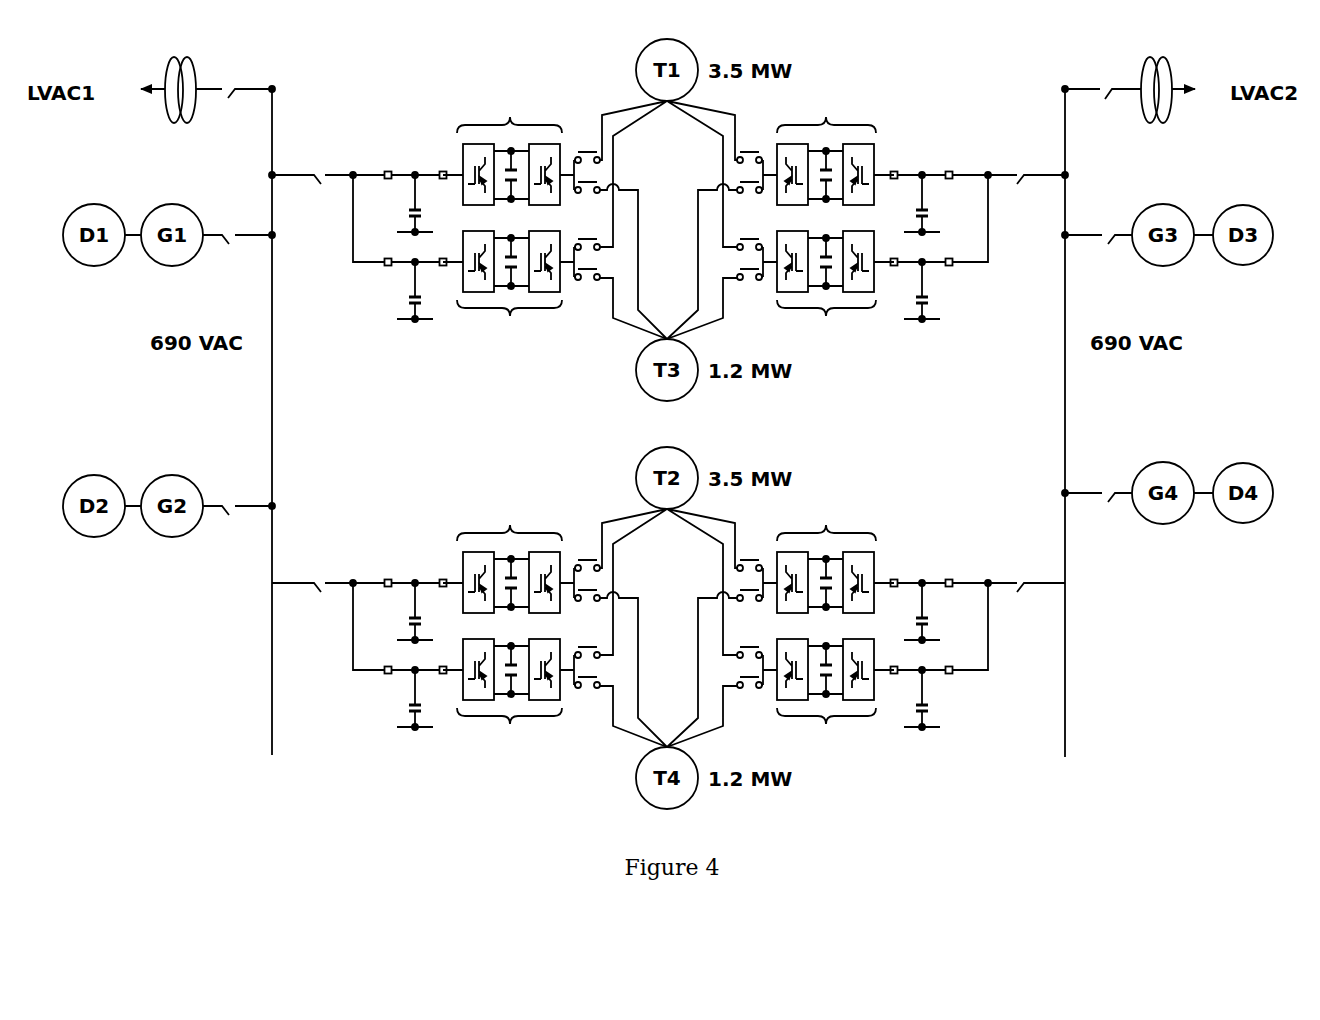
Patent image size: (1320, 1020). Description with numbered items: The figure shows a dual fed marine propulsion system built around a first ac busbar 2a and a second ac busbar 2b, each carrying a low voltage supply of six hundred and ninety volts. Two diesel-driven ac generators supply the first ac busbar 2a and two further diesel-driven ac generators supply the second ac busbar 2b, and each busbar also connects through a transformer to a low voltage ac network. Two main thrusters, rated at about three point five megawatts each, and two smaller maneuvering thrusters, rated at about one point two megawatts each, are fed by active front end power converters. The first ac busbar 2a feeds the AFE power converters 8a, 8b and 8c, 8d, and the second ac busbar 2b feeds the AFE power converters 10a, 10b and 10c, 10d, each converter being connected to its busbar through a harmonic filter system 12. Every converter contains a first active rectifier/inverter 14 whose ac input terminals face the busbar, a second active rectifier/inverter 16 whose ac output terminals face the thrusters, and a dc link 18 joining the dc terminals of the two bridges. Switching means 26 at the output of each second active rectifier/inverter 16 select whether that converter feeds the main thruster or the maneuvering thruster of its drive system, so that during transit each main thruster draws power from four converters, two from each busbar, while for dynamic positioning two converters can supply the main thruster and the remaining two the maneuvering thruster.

The first ac busbar 2a is at (262, 450).
The second ac busbar 2b is at (1078, 562).
The first AFE power converter 8a is at (502, 145).
The third AFE power converter 8b is at (503, 312).
The AFE power converter 8c is at (502, 553).
The AFE power converter 8d is at (502, 697).
The second AFE power converter 10a is at (835, 145).
The fourth AFE power converter 10b is at (835, 288).
The AFE power converter 10c is at (835, 553).
The AFE power converter 10d is at (835, 697).
The harmonic filter system 12 is at (402, 163).
The first active rectifier/inverter 14 is at (477, 298).
The second active rectifier/inverter 16 is at (548, 298).
The dc link 18 is at (512, 298).
The switching means 26 is at (585, 137).